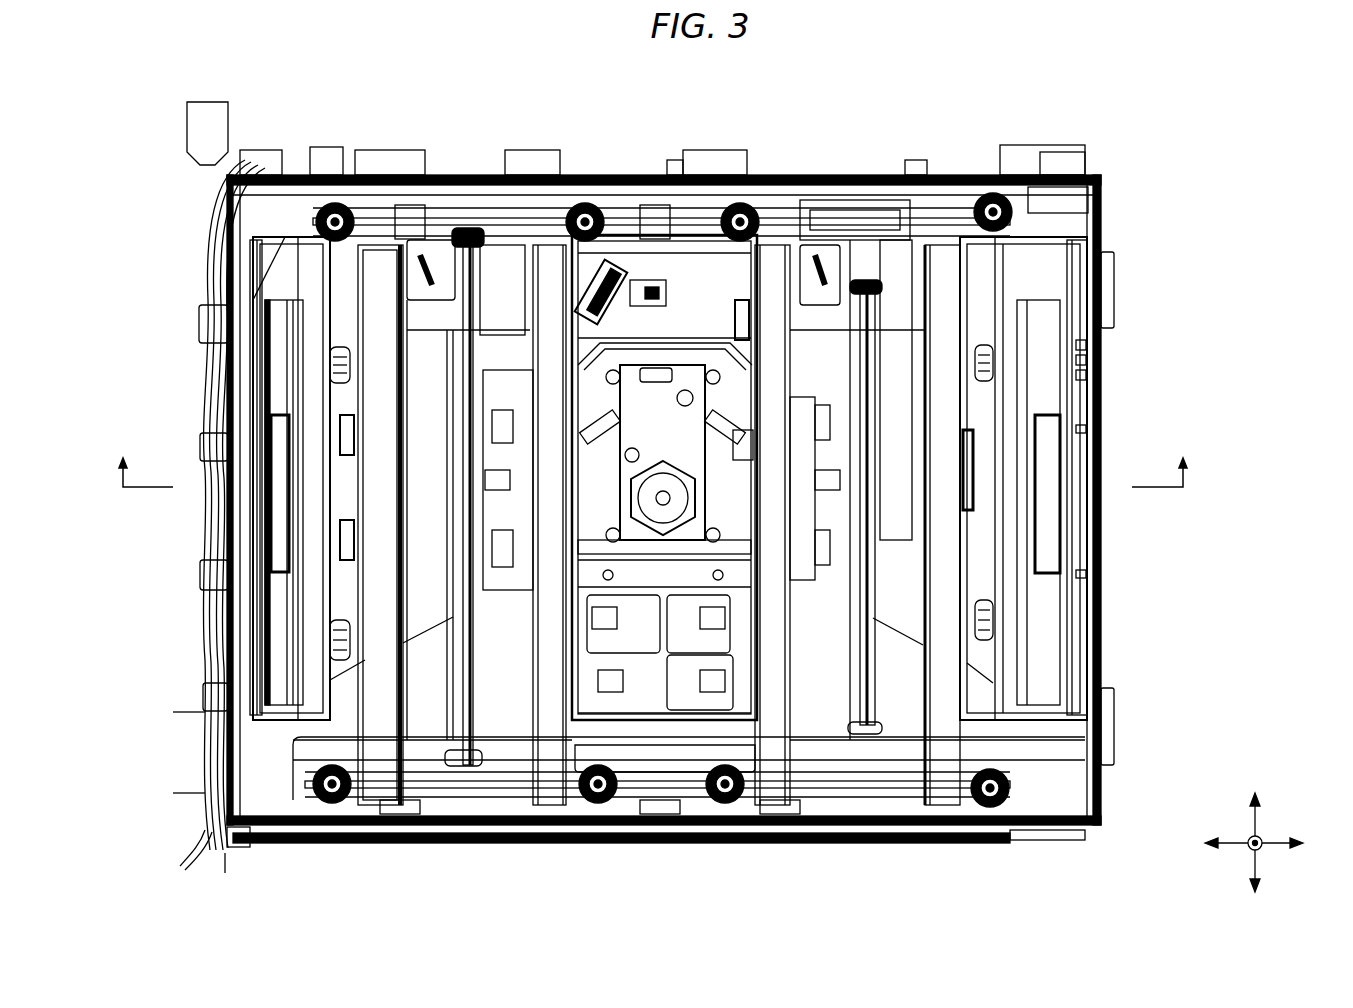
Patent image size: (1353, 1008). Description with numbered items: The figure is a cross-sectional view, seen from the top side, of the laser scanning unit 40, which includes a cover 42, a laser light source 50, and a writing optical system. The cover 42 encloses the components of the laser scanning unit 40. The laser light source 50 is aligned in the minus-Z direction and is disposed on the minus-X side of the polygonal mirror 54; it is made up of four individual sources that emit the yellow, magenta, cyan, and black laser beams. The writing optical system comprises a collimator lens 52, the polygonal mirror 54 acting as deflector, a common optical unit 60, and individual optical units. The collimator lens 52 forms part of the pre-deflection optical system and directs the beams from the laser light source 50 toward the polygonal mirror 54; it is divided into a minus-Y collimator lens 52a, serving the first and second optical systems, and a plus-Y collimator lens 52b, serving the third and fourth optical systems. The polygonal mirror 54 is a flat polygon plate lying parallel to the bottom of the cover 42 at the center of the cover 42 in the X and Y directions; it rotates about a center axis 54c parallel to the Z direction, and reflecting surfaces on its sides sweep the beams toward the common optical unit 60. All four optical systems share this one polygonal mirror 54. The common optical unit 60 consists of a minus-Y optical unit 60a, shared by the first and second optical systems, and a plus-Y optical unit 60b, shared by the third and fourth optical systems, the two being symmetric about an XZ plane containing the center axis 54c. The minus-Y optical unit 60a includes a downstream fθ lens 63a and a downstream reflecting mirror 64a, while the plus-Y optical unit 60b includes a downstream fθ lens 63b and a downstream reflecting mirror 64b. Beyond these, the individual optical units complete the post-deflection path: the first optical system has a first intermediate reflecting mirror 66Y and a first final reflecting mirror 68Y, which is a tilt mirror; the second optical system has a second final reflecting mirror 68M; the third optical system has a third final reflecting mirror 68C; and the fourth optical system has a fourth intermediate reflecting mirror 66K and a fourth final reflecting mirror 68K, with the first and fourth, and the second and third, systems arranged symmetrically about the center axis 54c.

The laser scanning unit 40 is at (1136, 128).
The cover 42 is at (1103, 225).
The laser light source 50 is at (495, 810).
The collimator lens 52 is at (615, 189).
The −Y collimator lens 52a is at (578, 330).
The +Y collimator lens 52b is at (715, 345).
The polygonal mirror 54 is at (665, 492).
The center axis 54c is at (640, 460).
The common optical unit 60 is at (217, 478).
The −Y optical unit 60a is at (125, 402).
The +Y optical unit 60b is at (1180, 344).
The downstream fθ lens 63a is at (257, 388).
The downstream fθ lens 63b is at (1077, 405).
The downstream reflecting mirror 64a is at (283, 345).
The downstream reflecting mirror 64b is at (1040, 363).
The first intermediate reflecting mirror 66Y is at (460, 295).
The fourth intermediate reflecting mirror 66K is at (870, 300).
The first final reflecting mirror 68Y is at (383, 295).
The second final reflecting mirror 68M is at (552, 295).
The third final reflecting mirror 68C is at (772, 295).
The fourth final reflecting mirror 68K is at (942, 295).